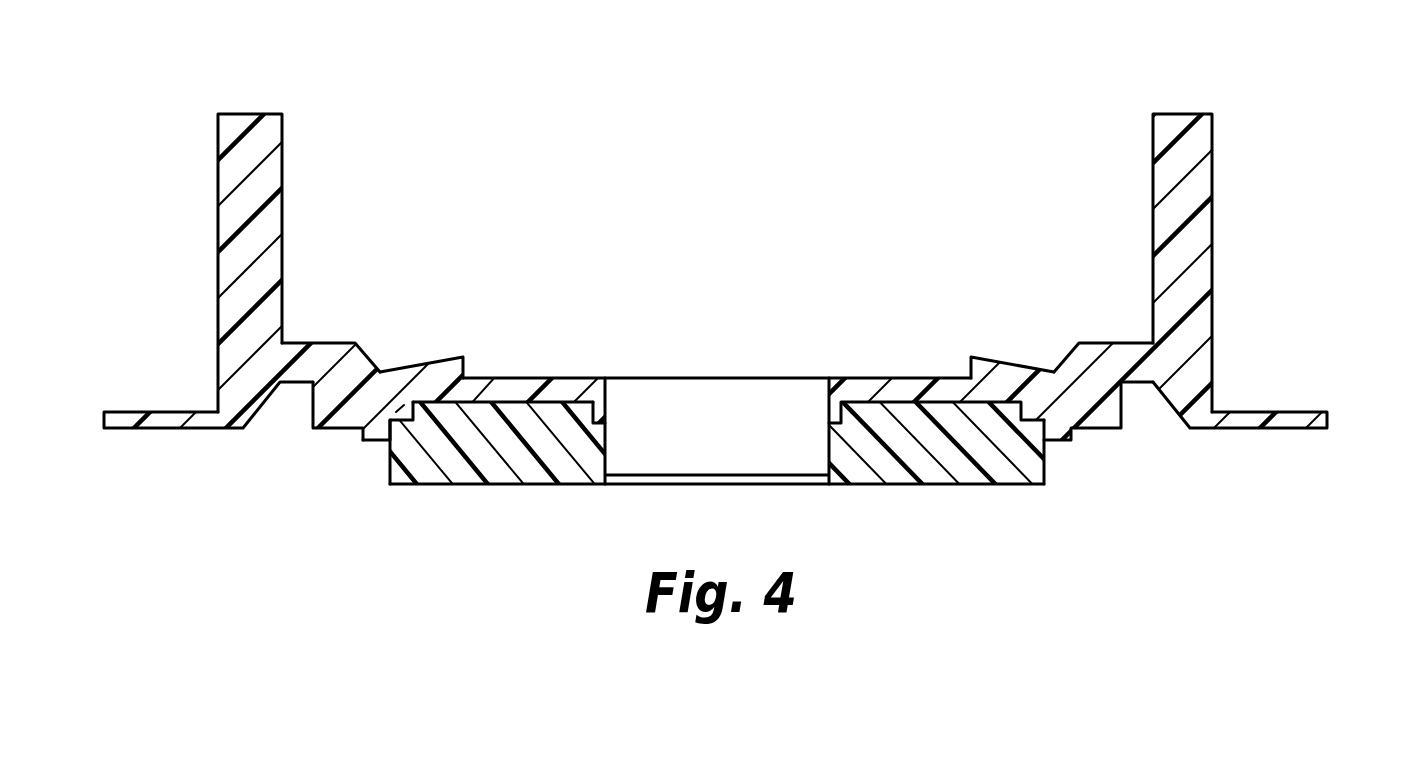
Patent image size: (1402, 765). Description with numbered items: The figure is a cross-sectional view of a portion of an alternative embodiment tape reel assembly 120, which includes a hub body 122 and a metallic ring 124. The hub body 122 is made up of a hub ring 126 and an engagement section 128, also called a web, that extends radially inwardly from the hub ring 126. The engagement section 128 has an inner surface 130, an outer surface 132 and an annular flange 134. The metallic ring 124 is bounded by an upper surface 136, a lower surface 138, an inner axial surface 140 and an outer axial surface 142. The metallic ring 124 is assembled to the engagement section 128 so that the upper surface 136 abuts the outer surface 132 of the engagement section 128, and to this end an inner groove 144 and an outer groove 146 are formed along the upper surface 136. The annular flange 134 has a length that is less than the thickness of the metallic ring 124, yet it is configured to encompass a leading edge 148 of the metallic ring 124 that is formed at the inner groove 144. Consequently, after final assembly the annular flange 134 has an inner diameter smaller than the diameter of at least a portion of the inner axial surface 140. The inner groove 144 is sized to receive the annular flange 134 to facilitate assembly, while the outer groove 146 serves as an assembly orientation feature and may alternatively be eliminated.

The tape reel assembly 120 is at (1248, 77).
The hub body 122 is at (306, 151).
The metallic ring 124 is at (477, 495).
The hub ring 126 is at (212, 176).
The engagement section 128 is at (366, 338).
The inner surface 130 is at (448, 357).
The outer surface 132 is at (315, 432).
The annular flange 134 is at (604, 392).
The upper surface 136 is at (520, 390).
The lower surface 138 is at (545, 487).
The inner axial surface 140 is at (608, 457).
The outer axial surface 142 is at (391, 470).
The inner groove 144 is at (607, 412).
The outer groove 146 is at (393, 422).
The leading edge 148 is at (827, 392).